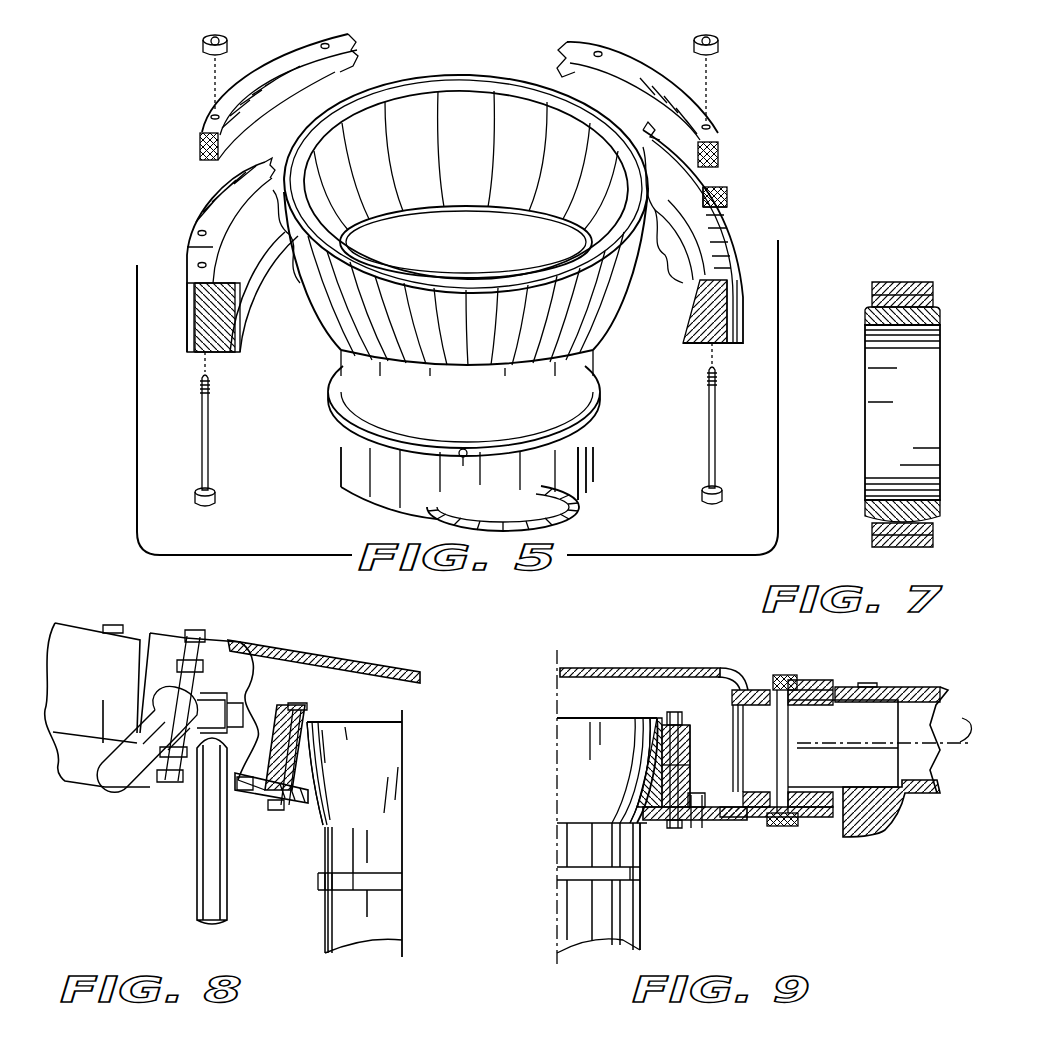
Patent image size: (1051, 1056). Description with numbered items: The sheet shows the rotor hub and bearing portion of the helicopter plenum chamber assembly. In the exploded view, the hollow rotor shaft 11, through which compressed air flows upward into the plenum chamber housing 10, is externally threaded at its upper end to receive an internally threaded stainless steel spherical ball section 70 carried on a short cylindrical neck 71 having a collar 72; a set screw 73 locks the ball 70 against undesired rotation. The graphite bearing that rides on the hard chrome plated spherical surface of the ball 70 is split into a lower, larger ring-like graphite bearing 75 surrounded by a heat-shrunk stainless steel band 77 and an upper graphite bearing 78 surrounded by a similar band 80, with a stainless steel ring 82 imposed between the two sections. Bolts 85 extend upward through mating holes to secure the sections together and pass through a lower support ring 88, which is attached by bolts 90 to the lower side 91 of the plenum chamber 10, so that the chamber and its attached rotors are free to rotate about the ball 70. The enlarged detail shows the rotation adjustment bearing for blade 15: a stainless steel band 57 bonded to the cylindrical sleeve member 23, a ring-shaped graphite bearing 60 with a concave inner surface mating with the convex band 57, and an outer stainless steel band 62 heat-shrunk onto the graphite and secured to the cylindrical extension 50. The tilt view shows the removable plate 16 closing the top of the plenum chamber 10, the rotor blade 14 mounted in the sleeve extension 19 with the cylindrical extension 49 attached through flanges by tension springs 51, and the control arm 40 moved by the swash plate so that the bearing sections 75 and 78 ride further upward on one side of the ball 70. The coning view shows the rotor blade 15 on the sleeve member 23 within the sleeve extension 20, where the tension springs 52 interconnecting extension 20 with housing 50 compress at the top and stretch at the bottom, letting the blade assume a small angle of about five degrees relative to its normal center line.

In FIG. 9, the plenum chamber housing 10 is at (730, 668).
In FIG. 5, the hollow rotor shaft 11 is at (578, 478).
In FIG. 9, the hollow rotor shaft 11 is at (629, 918).
In FIG. 8, the rotor blade 14 is at (84, 638).
In FIG. 9, the rotor blade 15 is at (930, 687).
In FIG. 8, the removable plate 16 is at (386, 663).
In FIG. 9, the removable plate 16 is at (663, 668).
In FIG. 8, the sleeve extension 19 is at (228, 645).
In FIG. 9, the sleeve extension 20 is at (760, 690).
In FIG. 9, the cylindrical sleeve member 23 is at (835, 707).
In FIG. 8, the control arm 40 is at (198, 838).
In FIG. 8, the cylindrical extension 49 is at (167, 643).
In FIG. 9, the cylindrical extension 50 is at (812, 680).
In FIG. 8, the tension spring 51 is at (192, 635).
In FIG. 9, the tension spring 52 is at (787, 675).
In FIG. 7, the stainless steel band 57 is at (870, 506).
In FIG. 7, the ring-shaped graphite bearing 60 is at (872, 532).
In FIG. 7, the stainless steel band 62 is at (924, 282).
In FIG. 5, the spherical ball section 70 is at (470, 337).
In FIG. 8, the spherical ball section 70 is at (370, 727).
In FIG. 9, the spherical ball section 70 is at (638, 825).
In FIG. 5, the cylindrical neck 71 is at (430, 408).
In FIG. 5, the collar 72 is at (368, 438).
In FIG. 5, the set screw 73 is at (462, 462).
In FIG. 5, the graphite bearing 75 is at (242, 322).
In FIG. 8, the graphite bearing 75 is at (292, 788).
In FIG. 9, the graphite bearing 75 is at (662, 798).
In FIG. 5, the stainless steel band 77 is at (187, 325).
In FIG. 8, the stainless steel band 77 is at (267, 758).
In FIG. 9, the stainless steel band 77 is at (692, 797).
In FIG. 5, the graphite bearing 78 is at (250, 118).
In FIG. 8, the graphite bearing 78 is at (312, 713).
In FIG. 9, the graphite bearing 78 is at (662, 750).
In FIG. 5, the stainless steel band 80 is at (201, 142).
In FIG. 8, the stainless steel band 80 is at (280, 715).
In FIG. 9, the stainless steel band 80 is at (690, 740).
In FIG. 5, the stainless steel ring 82 is at (735, 183).
In FIG. 9, the stainless steel ring 82 is at (690, 757).
In FIG. 5, the bolt 85 is at (214, 419).
In FIG. 8, the bolt 85 is at (280, 808).
In FIG. 9, the bolt 85 is at (668, 828).
In FIG. 8, the lower support ring 88 is at (308, 807).
In FIG. 9, the lower support ring 88 is at (655, 823).
In FIG. 9, the bolt 90 is at (694, 828).
In FIG. 9, the lower side of the plenum chamber 91 is at (730, 820).